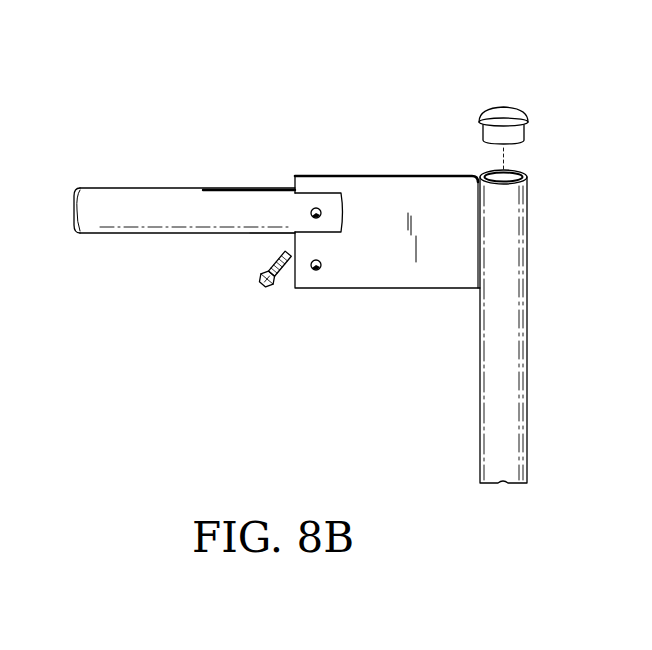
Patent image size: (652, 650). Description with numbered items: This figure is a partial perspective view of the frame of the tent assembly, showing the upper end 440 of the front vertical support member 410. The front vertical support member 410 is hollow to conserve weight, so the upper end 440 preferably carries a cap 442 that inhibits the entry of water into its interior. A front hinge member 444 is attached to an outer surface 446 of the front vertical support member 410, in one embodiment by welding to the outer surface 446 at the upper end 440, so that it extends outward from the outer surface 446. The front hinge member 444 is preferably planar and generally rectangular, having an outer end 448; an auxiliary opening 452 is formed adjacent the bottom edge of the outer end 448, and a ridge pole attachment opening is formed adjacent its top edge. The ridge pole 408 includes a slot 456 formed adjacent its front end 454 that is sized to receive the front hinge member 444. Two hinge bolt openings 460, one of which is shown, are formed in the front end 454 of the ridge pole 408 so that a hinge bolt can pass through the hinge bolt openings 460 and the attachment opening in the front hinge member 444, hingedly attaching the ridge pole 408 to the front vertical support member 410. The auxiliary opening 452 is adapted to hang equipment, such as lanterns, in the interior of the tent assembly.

The ridge pole 408 is at (105, 210).
The front end of the ridge pole 454 is at (230, 215).
The slot 456 is at (258, 182).
The hinge bolt opening 460 is at (315, 208).
The front hinge member 444 is at (390, 187).
The auxiliary opening 452 is at (316, 272).
The outer end of the front hinge member 448 is at (288, 280).
The outer surface of the front vertical support member 446 is at (492, 262).
The upper end of the front vertical support member 440 is at (429, 232).
The front vertical support member 410 is at (536, 458).
The cap 442 is at (503, 117).